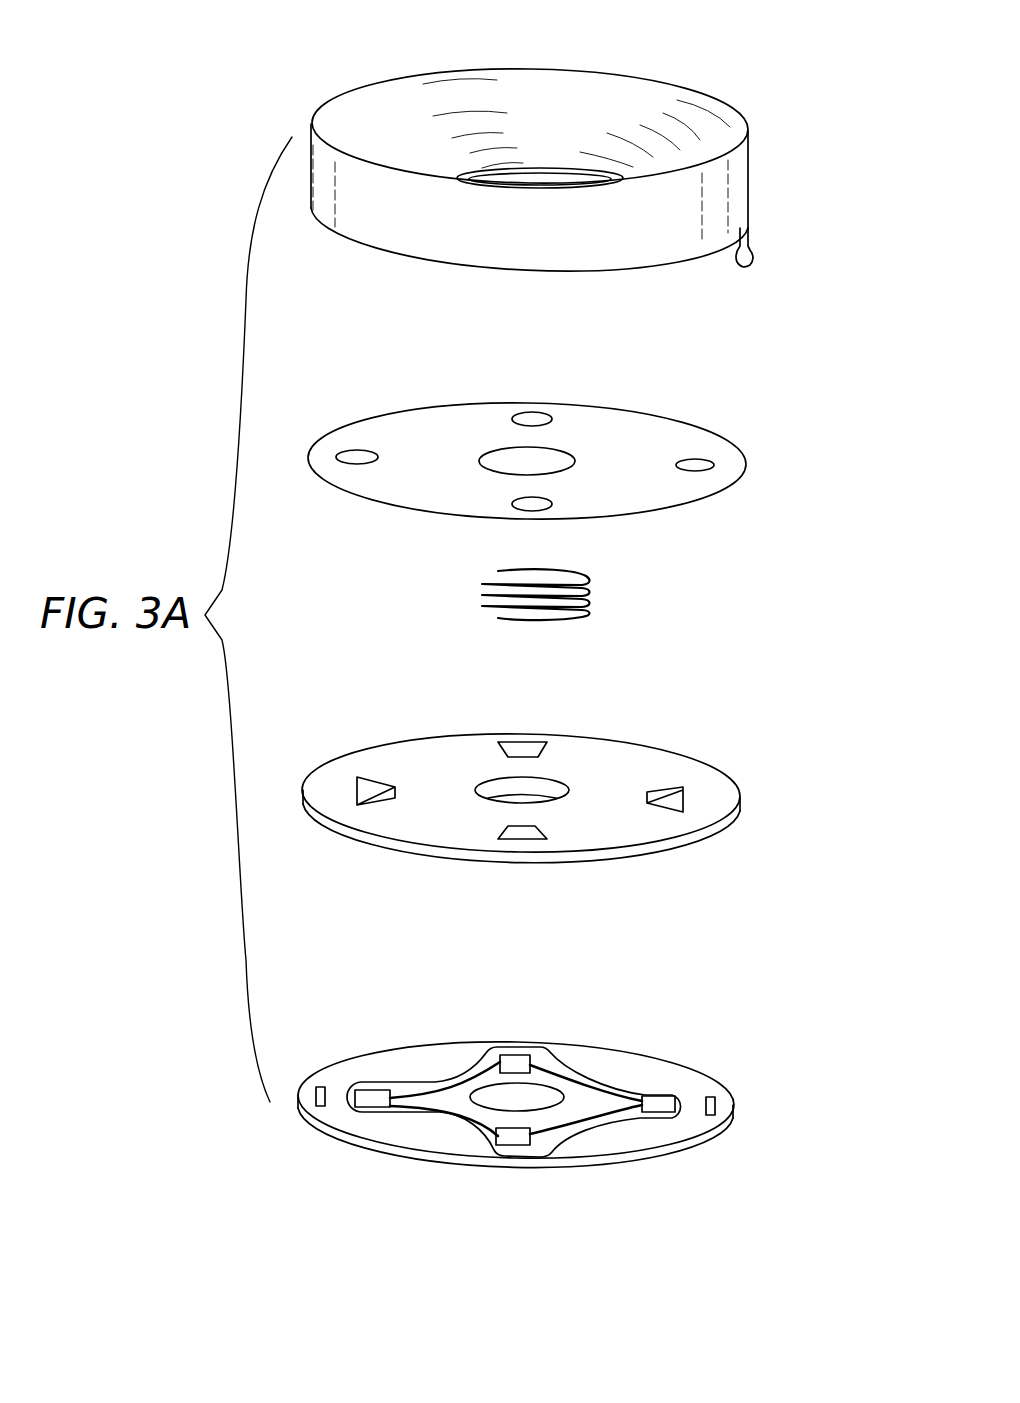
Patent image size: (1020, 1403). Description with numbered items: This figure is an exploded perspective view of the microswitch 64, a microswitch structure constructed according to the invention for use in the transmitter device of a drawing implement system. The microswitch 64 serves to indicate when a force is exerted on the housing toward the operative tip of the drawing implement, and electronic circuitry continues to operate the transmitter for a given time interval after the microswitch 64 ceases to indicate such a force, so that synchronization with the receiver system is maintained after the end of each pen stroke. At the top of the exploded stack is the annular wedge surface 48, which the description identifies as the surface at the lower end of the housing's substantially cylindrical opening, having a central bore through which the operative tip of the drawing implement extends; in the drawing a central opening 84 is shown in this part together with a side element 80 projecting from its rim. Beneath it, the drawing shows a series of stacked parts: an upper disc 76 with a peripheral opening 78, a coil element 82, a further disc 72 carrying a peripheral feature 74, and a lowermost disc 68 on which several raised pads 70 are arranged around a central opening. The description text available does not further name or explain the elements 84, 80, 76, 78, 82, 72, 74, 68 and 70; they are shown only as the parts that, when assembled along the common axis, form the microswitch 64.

The microswitch 64 is at (788, 43).
The annular wedge surface 48 is at (610, 103).
The central aperture 84 is at (532, 170).
The tab 80 is at (737, 188).
The perforated disc 76 is at (728, 462).
The aperture 78 is at (698, 468).
The coil spring 82 is at (587, 603).
The valve disc 72 is at (740, 805).
The notch 74 is at (683, 790).
The base disc 68 is at (321, 1092).
The contact pad 70 is at (372, 1100).